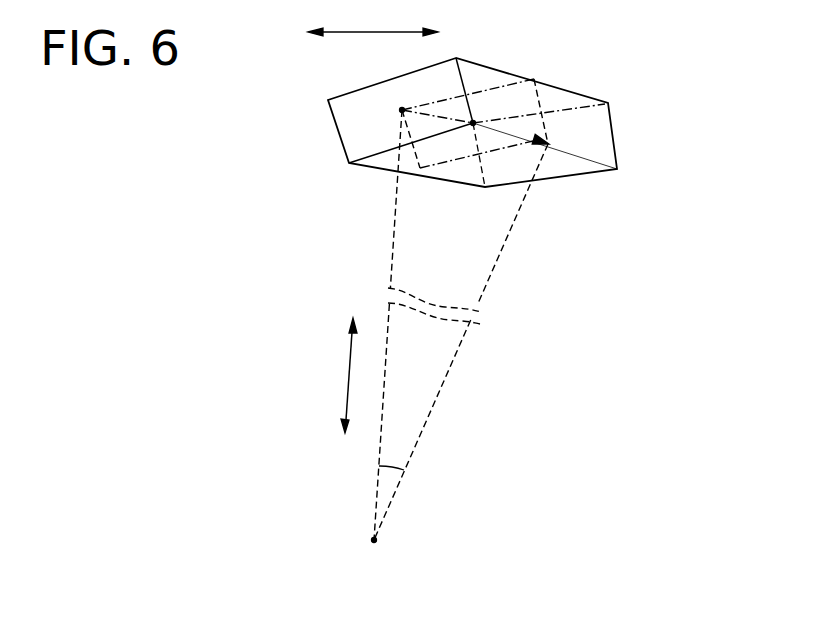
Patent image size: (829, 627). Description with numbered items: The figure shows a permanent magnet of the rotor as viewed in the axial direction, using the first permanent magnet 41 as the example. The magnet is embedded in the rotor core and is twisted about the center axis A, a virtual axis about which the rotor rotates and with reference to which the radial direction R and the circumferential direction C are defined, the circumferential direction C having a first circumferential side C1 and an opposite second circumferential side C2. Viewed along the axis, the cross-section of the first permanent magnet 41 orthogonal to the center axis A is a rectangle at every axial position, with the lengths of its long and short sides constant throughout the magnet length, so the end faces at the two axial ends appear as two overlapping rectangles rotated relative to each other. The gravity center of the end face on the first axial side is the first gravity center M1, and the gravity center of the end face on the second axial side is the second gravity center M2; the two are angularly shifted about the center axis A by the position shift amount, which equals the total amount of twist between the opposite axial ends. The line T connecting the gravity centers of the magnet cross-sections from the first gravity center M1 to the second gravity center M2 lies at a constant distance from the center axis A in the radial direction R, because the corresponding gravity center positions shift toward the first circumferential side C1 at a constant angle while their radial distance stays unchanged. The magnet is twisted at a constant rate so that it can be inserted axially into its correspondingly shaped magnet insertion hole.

The first permanent magnet 41 is at (593, 120).
The line connecting the gravity centers T is at (475, 92).
The first gravity center M1 is at (402, 111).
The second gravity center M2 is at (550, 146).
The center axis A is at (371, 538).
The radial direction R is at (341, 375).
The circumferential direction C is at (373, 16).
The first circumferential side C1 is at (447, 35).
The second circumferential side C2 is at (298, 35).